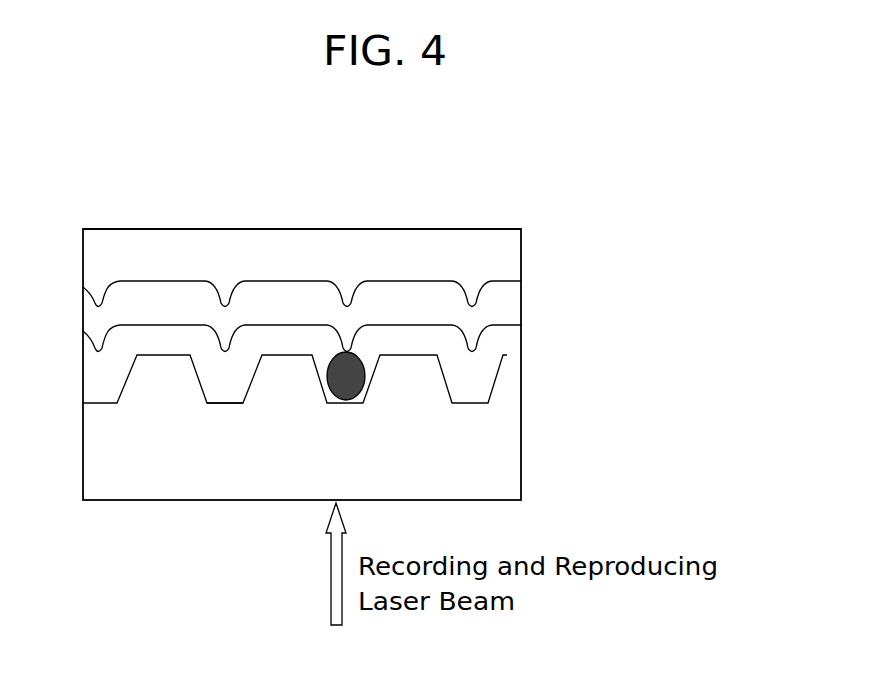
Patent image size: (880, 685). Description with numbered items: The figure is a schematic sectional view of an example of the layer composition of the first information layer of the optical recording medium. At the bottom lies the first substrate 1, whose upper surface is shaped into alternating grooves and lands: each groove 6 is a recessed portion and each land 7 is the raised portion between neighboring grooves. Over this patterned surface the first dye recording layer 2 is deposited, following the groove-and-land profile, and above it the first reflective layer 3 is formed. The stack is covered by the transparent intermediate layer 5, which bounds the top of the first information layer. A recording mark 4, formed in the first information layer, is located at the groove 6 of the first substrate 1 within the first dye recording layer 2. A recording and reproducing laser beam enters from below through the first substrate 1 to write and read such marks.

The first substrate 1 is at (472, 475).
The first dye recording layer 2 is at (470, 372).
The first reflective layer 3 is at (433, 298).
The recording mark 4 is at (365, 350).
The transparent intermediate layer 5 is at (223, 248).
The groove 6 is at (225, 405).
The land 7 is at (173, 350).